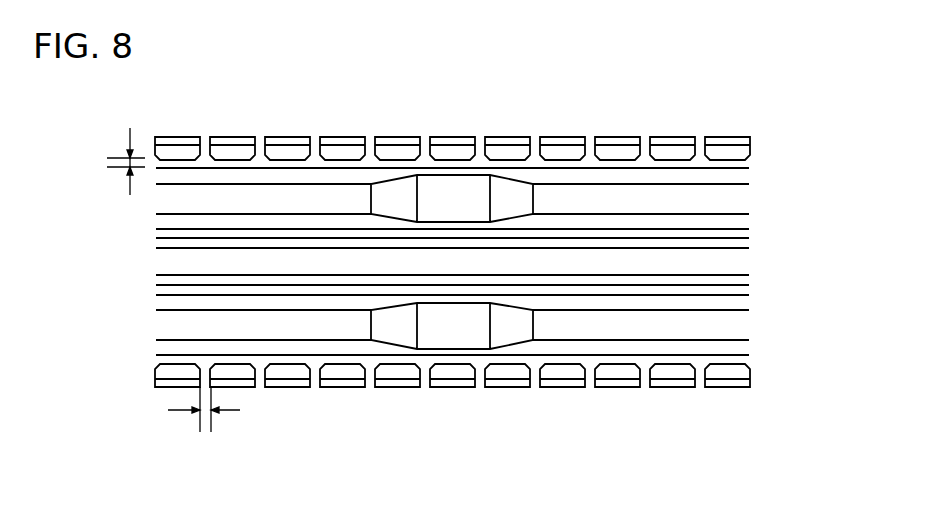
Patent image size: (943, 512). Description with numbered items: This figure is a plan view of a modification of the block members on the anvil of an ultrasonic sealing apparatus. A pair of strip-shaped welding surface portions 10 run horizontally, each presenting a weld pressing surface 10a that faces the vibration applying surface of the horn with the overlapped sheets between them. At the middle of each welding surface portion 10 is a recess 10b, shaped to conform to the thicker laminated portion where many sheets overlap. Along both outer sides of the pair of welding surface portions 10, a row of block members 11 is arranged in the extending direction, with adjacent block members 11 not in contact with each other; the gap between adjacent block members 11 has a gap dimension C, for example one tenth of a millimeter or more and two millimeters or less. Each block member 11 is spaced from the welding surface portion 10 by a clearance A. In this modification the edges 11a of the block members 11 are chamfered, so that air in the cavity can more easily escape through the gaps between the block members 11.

The welding surface portion 10 is at (758, 168).
The weld pressing surface 10a is at (725, 200).
The recess 10b is at (455, 188).
The block member 11 is at (728, 137).
The edge 11a is at (588, 158).
The clearance A is at (116, 161).
The gap dimension C is at (204, 422).